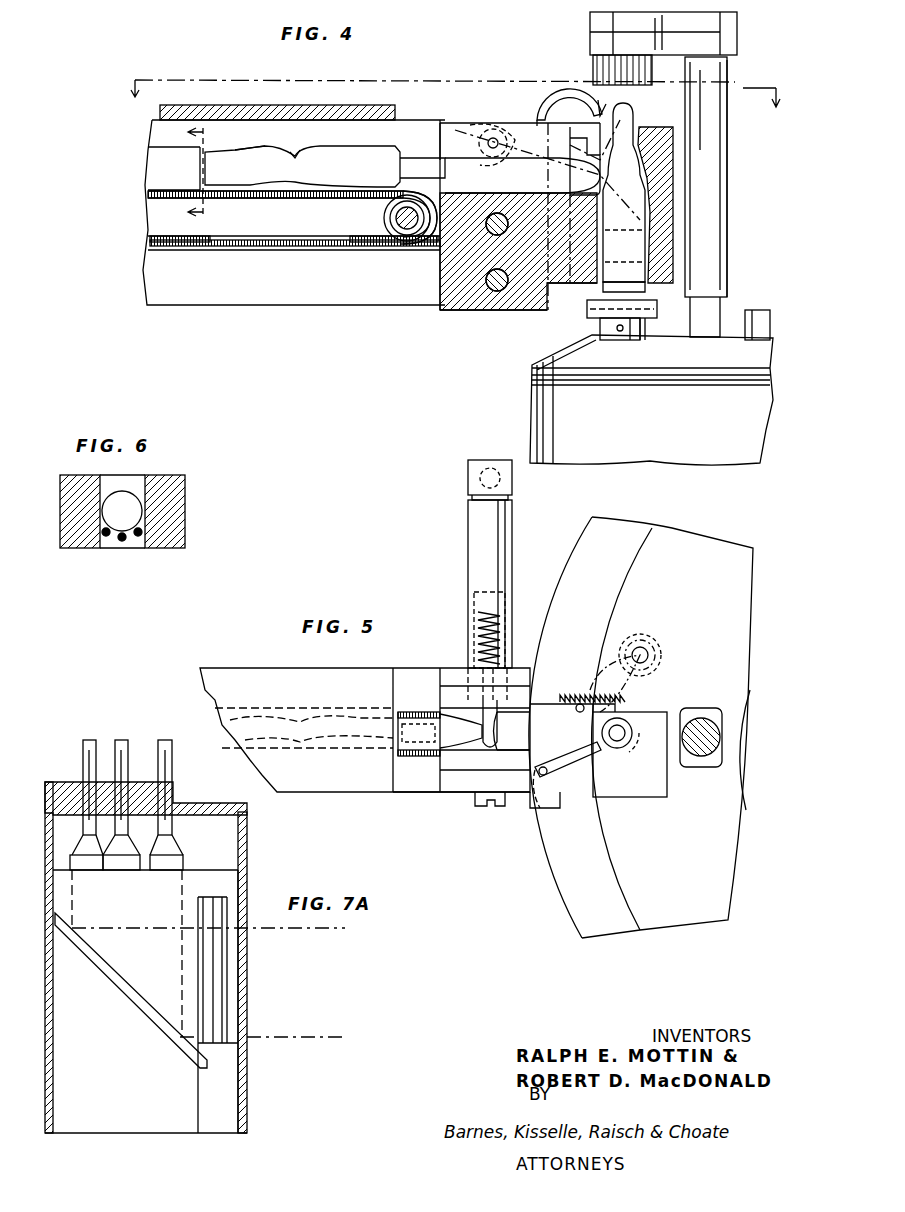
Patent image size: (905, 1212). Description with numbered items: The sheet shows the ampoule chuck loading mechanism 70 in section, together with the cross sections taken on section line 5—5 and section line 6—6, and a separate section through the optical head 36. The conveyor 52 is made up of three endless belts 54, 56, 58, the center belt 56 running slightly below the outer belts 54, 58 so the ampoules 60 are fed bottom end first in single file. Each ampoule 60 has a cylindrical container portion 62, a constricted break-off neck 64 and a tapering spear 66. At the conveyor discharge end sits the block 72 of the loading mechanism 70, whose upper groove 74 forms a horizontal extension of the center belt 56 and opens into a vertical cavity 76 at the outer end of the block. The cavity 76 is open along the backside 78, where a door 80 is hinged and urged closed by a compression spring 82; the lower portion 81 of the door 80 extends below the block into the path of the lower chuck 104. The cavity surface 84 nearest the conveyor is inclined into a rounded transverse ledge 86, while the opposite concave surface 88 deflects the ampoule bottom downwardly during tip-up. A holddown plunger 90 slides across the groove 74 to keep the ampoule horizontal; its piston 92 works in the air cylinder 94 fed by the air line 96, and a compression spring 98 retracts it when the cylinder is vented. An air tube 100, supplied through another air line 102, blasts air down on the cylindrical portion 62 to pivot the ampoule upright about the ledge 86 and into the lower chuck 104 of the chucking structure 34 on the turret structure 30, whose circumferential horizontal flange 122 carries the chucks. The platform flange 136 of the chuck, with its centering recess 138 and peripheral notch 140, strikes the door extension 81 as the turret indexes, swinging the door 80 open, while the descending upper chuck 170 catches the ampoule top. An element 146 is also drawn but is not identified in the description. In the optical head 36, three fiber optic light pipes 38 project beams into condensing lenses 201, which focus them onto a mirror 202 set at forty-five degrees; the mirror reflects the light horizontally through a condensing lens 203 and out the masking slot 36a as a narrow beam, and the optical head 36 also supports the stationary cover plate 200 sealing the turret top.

In FIG. 4, the section line 5— 5 is at (454, 79).
In FIG. 4, the section line 6— 6 is at (202, 174).
In FIG. 4, the turret structure 30 is at (522, 399).
In FIG. 4, the chucking structure 34 is at (757, 35).
In FIG. 7A, the optical head 36 is at (45, 1040).
In FIG. 7A, the masking slot 36a is at (240, 978).
In FIG. 7A, the fiber optic light pipes 38 is at (165, 740).
In FIG. 4, the conveyor 52 is at (198, 306).
In FIG. 6, the conveyor 52 is at (60, 514).
In FIG. 5, the conveyor 52 is at (238, 672).
In FIG. 6, the outer endless belt 54 is at (106, 540).
In FIG. 4, the center belt 56 is at (276, 240).
In FIG. 6, the center belt 56 is at (122, 542).
In FIG. 4, the outer endless belt 58 is at (190, 250).
In FIG. 6, the outer endless belt 58 is at (138, 540).
In FIG. 4, the ampoule 60 is at (366, 150).
In FIG. 6, the ampoule 60 is at (125, 492).
In FIG. 5, the ampoule 60 is at (338, 752).
In FIG. 4, the cylindrical container portion 62 is at (346, 186).
In FIG. 4, the break-off neck 64 is at (298, 153).
In FIG. 4, the spear 66 is at (247, 150).
In FIG. 4, the chuck loading mechanism 70 is at (462, 313).
In FIG. 4, the block 72 is at (526, 310).
In FIG. 5, the block 72 is at (462, 795).
In FIG. 4, the groove 74 is at (520, 216).
In FIG. 5, the groove 74 is at (436, 710).
In FIG. 4, the vertical cavity 76 is at (583, 288).
In FIG. 5, the vertical cavity 76 is at (615, 755).
In FIG. 5, the backside 78 is at (665, 712).
In FIG. 4, the door 80 is at (594, 140).
In FIG. 5, the door 80 is at (592, 690).
In FIG. 4, the lower portion of the door 81 is at (585, 310).
In FIG. 5, the compression spring 82 is at (576, 694).
In FIG. 4, the cavity surface 84 is at (550, 251).
In FIG. 4, the transverse ledge 86 is at (550, 224).
In FIG. 4, the concave cavity surface 88 is at (668, 130).
In FIG. 4, the holddown plunger 90 is at (493, 138).
In FIG. 5, the holddown plunger 90 is at (478, 750).
In FIG. 5, the piston 92 is at (502, 604).
In FIG. 4, the air cylinder 94 is at (455, 125).
In FIG. 5, the air cylinder 94 is at (468, 530).
In FIG. 5, the air line 96 is at (482, 468).
In FIG. 5, the compression spring 98 is at (478, 634).
In FIG. 4, the air tube 100 is at (563, 95).
In FIG. 5, the air tube 100 is at (588, 795).
In FIG. 5, the air line 102 is at (500, 810).
In FIG. 4, the lower chuck 104 is at (652, 342).
In FIG. 4, the circumferential horizontal flange 122 is at (532, 372).
In FIG. 5, the circumferential horizontal flange 122 is at (683, 928).
In FIG. 4, the platform flange 136 is at (660, 318).
In FIG. 5, the platform flange 136 is at (644, 632).
In FIG. 4, the recess 138 is at (660, 22).
In FIG. 4, the notch 140 is at (621, 334).
In FIG. 4, the guide 146 is at (727, 285).
In FIG. 5, the guide 146 is at (686, 768).
In FIG. 4, the upper chuck 170 is at (650, 90).
In FIG. 4, the stationary cover plate 200 is at (750, 316).
In FIG. 7A, the condensing lenses 201 is at (165, 872).
In FIG. 7A, the mirror 202 is at (130, 998).
In FIG. 7A, the condensing lens 203 is at (200, 953).